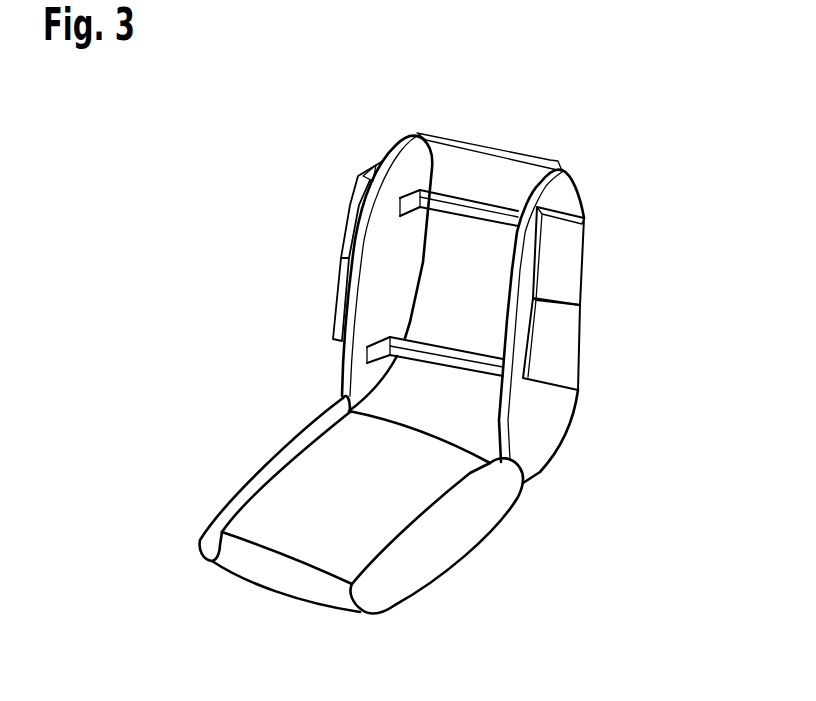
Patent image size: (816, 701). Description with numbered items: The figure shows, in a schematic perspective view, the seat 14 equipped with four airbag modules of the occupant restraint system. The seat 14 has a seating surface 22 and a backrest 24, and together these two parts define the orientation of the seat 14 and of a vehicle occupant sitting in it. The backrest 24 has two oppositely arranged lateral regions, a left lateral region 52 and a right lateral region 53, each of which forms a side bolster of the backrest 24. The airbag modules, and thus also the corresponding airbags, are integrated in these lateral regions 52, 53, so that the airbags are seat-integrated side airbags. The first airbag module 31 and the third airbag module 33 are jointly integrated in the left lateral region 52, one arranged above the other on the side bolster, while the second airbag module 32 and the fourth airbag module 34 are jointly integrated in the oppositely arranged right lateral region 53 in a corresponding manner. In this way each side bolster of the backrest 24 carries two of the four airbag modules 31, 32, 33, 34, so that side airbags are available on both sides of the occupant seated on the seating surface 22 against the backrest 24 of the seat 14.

The seat 14 is at (209, 152).
The seating surface 22 is at (317, 470).
The backrest 24 is at (465, 242).
The first airbag module 31 is at (572, 260).
The second airbag module 32 is at (349, 240).
The third airbag module 33 is at (565, 335).
The fourth airbag module 34 is at (343, 308).
The left lateral region 52 is at (610, 243).
The right lateral region 53 is at (334, 189).